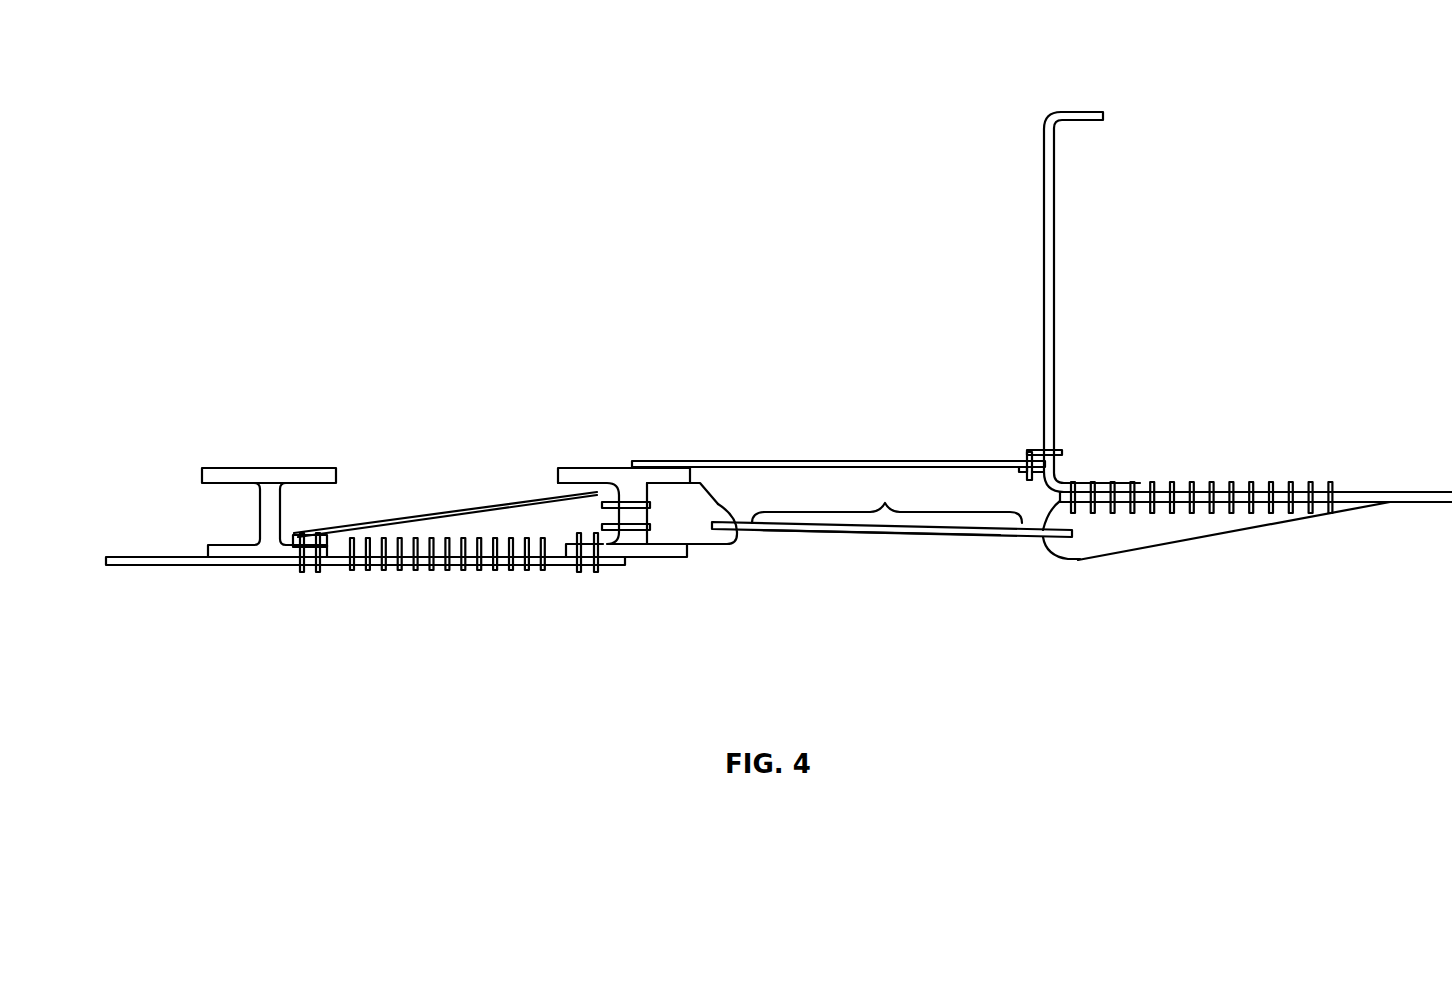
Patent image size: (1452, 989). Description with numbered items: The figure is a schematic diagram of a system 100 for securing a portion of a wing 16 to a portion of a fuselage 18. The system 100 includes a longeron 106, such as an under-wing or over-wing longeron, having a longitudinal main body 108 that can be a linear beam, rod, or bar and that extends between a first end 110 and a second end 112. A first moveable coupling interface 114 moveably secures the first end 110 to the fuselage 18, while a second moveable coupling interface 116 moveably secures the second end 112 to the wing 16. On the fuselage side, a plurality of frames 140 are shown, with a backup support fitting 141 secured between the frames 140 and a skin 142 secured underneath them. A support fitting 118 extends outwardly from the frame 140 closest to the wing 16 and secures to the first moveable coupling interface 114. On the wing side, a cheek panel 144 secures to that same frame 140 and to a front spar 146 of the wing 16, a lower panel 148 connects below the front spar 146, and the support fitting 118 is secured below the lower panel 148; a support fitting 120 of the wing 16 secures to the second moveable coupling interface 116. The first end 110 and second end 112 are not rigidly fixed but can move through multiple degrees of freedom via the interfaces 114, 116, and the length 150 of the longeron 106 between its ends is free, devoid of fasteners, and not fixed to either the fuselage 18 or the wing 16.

The wing 16 is at (1256, 410).
The fuselage 18 is at (241, 432).
The system 100 is at (1051, 584).
The longeron 106 is at (905, 542).
The main body 108 is at (836, 533).
The first end 110 is at (735, 532).
The second end 112 is at (1073, 533).
The first moveable coupling interface 114 is at (727, 520).
The second moveable coupling interface 116 is at (1055, 540).
The support fitting 118 is at (719, 506).
The support fitting 120 is at (1080, 553).
The frames 140 is at (577, 510).
The backup support fitting 141 is at (420, 513).
The skin 142 is at (236, 570).
The cheek panel 144 is at (832, 460).
The front spar 146 is at (1056, 201).
The lower panel 148 is at (1347, 493).
The length 150 is at (885, 503).